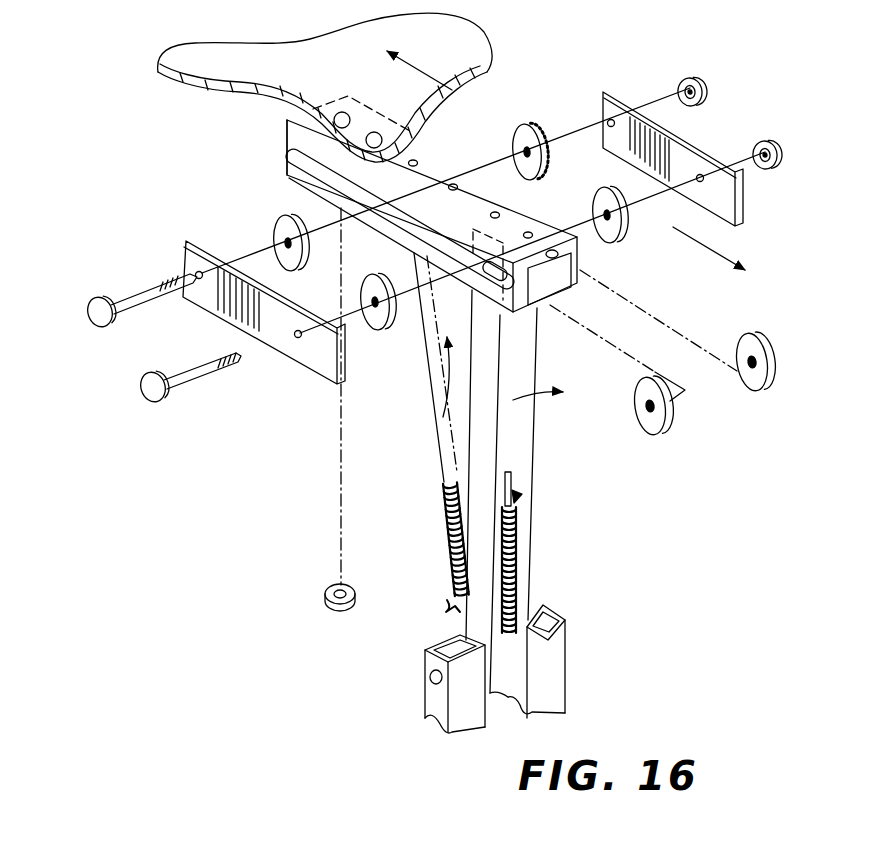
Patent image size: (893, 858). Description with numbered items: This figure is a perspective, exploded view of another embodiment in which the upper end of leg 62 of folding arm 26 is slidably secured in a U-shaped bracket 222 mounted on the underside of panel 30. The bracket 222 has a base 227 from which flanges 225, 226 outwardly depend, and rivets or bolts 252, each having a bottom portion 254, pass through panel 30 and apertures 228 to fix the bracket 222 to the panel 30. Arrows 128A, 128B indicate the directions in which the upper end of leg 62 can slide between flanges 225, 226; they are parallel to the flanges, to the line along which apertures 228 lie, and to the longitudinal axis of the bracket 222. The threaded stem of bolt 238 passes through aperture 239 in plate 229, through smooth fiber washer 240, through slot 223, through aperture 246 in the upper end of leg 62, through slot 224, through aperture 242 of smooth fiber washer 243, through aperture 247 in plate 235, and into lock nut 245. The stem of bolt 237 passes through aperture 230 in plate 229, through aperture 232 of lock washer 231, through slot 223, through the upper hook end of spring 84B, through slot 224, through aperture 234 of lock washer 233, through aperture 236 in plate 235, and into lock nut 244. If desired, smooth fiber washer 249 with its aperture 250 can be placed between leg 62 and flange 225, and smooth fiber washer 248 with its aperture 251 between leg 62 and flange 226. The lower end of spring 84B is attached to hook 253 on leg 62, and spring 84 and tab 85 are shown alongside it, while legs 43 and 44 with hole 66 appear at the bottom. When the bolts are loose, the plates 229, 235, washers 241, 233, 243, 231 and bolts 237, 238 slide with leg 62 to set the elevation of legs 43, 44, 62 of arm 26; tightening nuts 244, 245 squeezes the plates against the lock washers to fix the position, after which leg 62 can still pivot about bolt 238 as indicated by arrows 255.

The panel 30 is at (478, 46).
The arrow 128A is at (424, 44).
The arrow 128B is at (746, 268).
The rivets or bolts 252 is at (343, 112).
The base 227 is at (418, 160).
The U-shaped bracket 222 is at (279, 119).
The flange 225 is at (290, 137).
The slot 223 is at (296, 153).
The apertures 228 is at (453, 183).
The aperture 246 is at (500, 252).
The lock washer 231 is at (287, 204).
The flange 226 is at (578, 259).
The slot 224 is at (572, 262).
The plate 229 is at (200, 236).
The aperture 230 is at (195, 274).
The aperture 239 is at (301, 340).
The aperture 232 is at (276, 227).
The smooth fiber washer 240 is at (374, 290).
The bolt 237 is at (89, 314).
The bolt 238 is at (152, 402).
The plate 235 is at (589, 86).
The aperture 236 is at (612, 119).
The aperture 247 is at (703, 182).
The lock washer 233 is at (507, 110).
The aperture 234 is at (523, 127).
The smooth fiber washer 243 is at (626, 184).
The aperture 242 is at (594, 211).
The lock nut 244 is at (703, 94).
The lock nut 245 is at (779, 147).
The aperture 251 is at (766, 340).
The smooth fiber washer 248 is at (781, 389).
The aperture 250 is at (633, 407).
The smooth fiber washer 249 is at (654, 449).
The leg 62 is at (535, 450).
The arrows 255 is at (441, 410).
The washer 241 is at (402, 339).
The bottom portion 254 is at (328, 602).
The spring 84B is at (447, 545).
The hook 253 is at (447, 605).
The spring 84 is at (518, 528).
The tab 85 is at (513, 479).
The leg 43 is at (430, 706).
The hole 66 is at (430, 675).
The leg 44 is at (558, 676).
The folding arm 26 is at (590, 611).